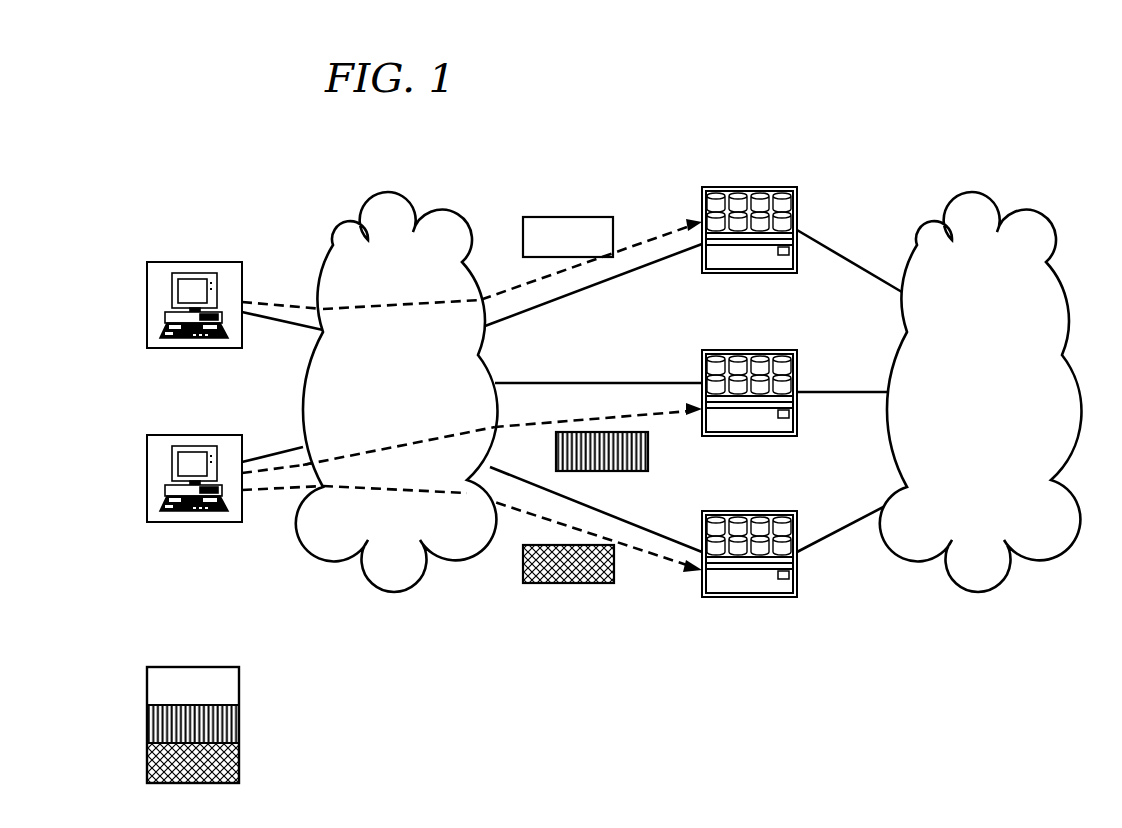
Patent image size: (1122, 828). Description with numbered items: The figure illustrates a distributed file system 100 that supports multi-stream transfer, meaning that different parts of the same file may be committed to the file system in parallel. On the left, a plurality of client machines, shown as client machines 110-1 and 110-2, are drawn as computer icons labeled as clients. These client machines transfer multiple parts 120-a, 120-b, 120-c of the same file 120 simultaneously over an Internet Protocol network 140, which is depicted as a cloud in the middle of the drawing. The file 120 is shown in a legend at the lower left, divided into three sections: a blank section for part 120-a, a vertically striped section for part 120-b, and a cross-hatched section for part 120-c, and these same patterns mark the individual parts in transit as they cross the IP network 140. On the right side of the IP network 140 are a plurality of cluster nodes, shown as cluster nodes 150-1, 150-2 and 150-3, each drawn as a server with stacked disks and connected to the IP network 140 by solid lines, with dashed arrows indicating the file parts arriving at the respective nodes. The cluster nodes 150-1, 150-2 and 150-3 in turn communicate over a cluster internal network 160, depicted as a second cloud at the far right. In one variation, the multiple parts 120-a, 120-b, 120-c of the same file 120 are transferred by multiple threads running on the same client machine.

The distributed file system 100 is at (210, 176).
The client machine 110-1 is at (147, 301).
The client machine 110-2 is at (147, 473).
The file 120 is at (167, 725).
The file part 120-a is at (568, 216).
The file part 120-b is at (600, 471).
The file part 120-c is at (575, 583).
The Internet Protocol (IP) network 140 is at (333, 248).
The cluster node 150-1 is at (760, 187).
The cluster node 150-2 is at (760, 350).
The cluster node 150-3 is at (760, 511).
The cluster internal network 160 is at (1046, 243).